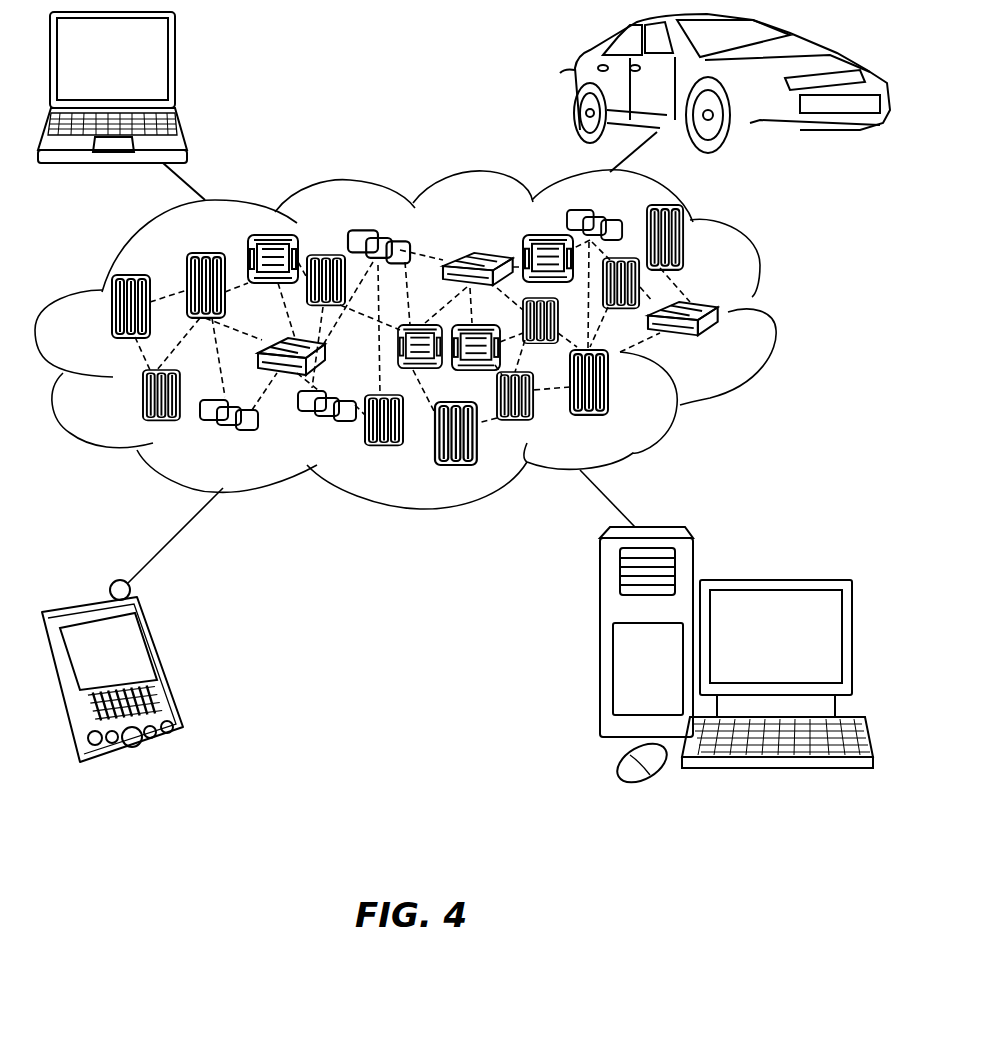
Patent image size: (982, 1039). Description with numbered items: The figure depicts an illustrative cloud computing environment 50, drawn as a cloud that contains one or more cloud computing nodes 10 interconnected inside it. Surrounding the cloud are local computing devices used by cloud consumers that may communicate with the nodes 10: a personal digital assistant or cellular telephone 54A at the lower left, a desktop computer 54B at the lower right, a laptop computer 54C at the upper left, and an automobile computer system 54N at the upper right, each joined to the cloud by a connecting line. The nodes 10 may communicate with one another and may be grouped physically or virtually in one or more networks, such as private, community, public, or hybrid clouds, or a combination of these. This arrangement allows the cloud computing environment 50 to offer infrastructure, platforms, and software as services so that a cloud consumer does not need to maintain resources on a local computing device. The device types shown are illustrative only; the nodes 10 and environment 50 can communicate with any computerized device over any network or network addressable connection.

The cloud computing node 10 is at (726, 346).
The cloud computing environment 50 is at (775, 320).
The personal digital assistant or cellular telephone 54A is at (172, 662).
The desktop computer 54B is at (774, 580).
The laptop computer 54C is at (182, 62).
The automobile computer system 54N is at (578, 82).